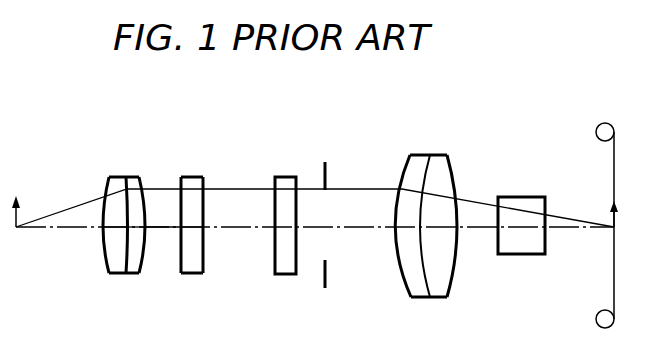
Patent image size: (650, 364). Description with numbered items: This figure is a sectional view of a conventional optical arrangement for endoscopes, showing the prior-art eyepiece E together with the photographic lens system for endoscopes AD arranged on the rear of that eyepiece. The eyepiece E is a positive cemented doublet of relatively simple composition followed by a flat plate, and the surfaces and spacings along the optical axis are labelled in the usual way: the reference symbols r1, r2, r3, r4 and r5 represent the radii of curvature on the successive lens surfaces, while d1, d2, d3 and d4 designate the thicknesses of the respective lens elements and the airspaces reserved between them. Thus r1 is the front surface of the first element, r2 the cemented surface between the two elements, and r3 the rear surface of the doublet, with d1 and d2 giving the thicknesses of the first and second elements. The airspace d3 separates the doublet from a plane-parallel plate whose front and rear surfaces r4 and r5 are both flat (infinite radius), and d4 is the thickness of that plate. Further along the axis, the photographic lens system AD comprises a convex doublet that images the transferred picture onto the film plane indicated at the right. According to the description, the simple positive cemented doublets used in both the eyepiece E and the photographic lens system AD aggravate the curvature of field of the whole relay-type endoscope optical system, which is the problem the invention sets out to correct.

The radius of curvature of first surface r1 is at (108, 188).
The radius of curvature of second surface r2 is at (126, 177).
The radius of curvature of third surface r3 is at (139, 188).
The radius of curvature of fourth surface r4 is at (181, 188).
The radius of curvature of fifth surface r5 is at (203, 188).
The thickness of first lens element d1 is at (112, 228).
The thickness of second lens element d2 is at (133, 228).
The airspace between doublet and plate d3 is at (160, 228).
The thickness of plane-parallel plate d4 is at (198, 228).
The eyepiece E is at (208, 297).
The photographic lens system for endoscopes AD is at (460, 308).